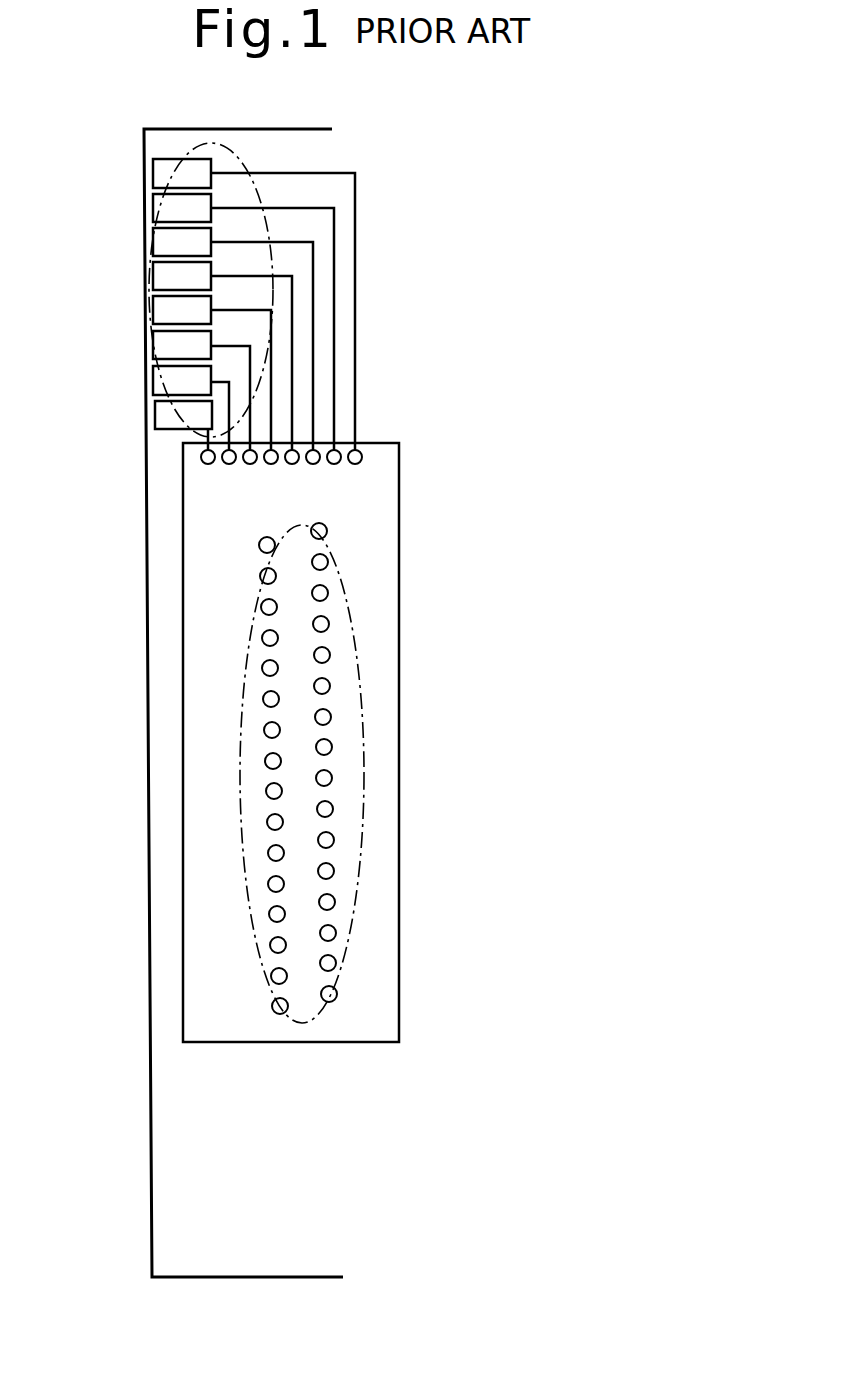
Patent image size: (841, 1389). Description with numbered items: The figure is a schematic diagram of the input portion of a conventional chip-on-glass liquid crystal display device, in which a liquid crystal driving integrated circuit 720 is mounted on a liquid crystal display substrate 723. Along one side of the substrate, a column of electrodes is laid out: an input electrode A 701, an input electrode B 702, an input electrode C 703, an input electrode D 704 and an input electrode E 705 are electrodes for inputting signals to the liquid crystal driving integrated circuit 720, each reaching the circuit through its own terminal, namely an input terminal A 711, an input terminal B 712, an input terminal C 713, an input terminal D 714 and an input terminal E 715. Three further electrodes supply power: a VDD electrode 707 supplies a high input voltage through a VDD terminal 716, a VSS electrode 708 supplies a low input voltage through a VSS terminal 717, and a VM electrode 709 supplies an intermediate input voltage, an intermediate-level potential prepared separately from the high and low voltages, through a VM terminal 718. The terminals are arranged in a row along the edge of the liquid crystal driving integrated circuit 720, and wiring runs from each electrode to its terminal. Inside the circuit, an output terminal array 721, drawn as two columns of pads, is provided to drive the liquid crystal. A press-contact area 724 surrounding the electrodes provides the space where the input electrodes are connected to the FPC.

The input electrode A 701 is at (153, 383).
The input electrode B 702 is at (153, 346).
The input electrode C 703 is at (153, 276).
The input electrode D 704 is at (153, 245).
The input electrode E 705 is at (153, 168).
The VDD electrode 707 is at (153, 311).
The VSS electrode 708 is at (153, 201).
The VM electrode 709 is at (156, 413).
The input terminal A 711 is at (226, 465).
The input terminal B 712 is at (248, 465).
The input terminal C 713 is at (291, 465).
The input terminal D 714 is at (313, 465).
The input terminal E 715 is at (361, 451).
The VDD terminal 716 is at (269, 465).
The VSS terminal 717 is at (334, 465).
The VM terminal 718 is at (203, 462).
The liquid crystal driving integrated circuit 720 is at (399, 653).
The output terminal array 721 is at (364, 812).
The liquid crystal display substrate 723 is at (228, 142).
The press-contact area 724 is at (274, 270).